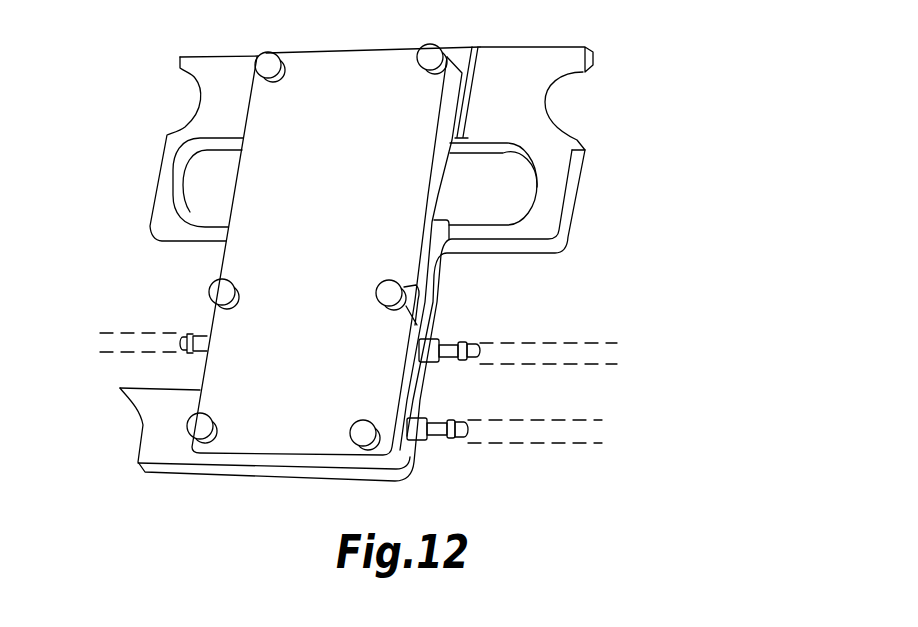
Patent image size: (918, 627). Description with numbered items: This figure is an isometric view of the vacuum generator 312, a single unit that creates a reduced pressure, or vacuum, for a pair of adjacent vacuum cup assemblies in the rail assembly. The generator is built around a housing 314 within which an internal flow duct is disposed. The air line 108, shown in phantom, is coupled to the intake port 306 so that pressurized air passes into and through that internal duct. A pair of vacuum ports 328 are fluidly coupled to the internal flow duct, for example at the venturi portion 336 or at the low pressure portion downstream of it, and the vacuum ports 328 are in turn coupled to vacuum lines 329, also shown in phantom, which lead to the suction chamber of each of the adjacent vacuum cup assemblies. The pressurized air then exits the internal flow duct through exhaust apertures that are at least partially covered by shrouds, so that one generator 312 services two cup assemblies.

The vacuum generator 312 is at (606, 104).
The housing 314 is at (216, 263).
The venturi portion 336 is at (206, 183).
The vacuum ports 328 is at (458, 340).
The vacuum lines 329 is at (562, 343).
The air line 108 is at (568, 422).
The intake port 306 is at (448, 445).